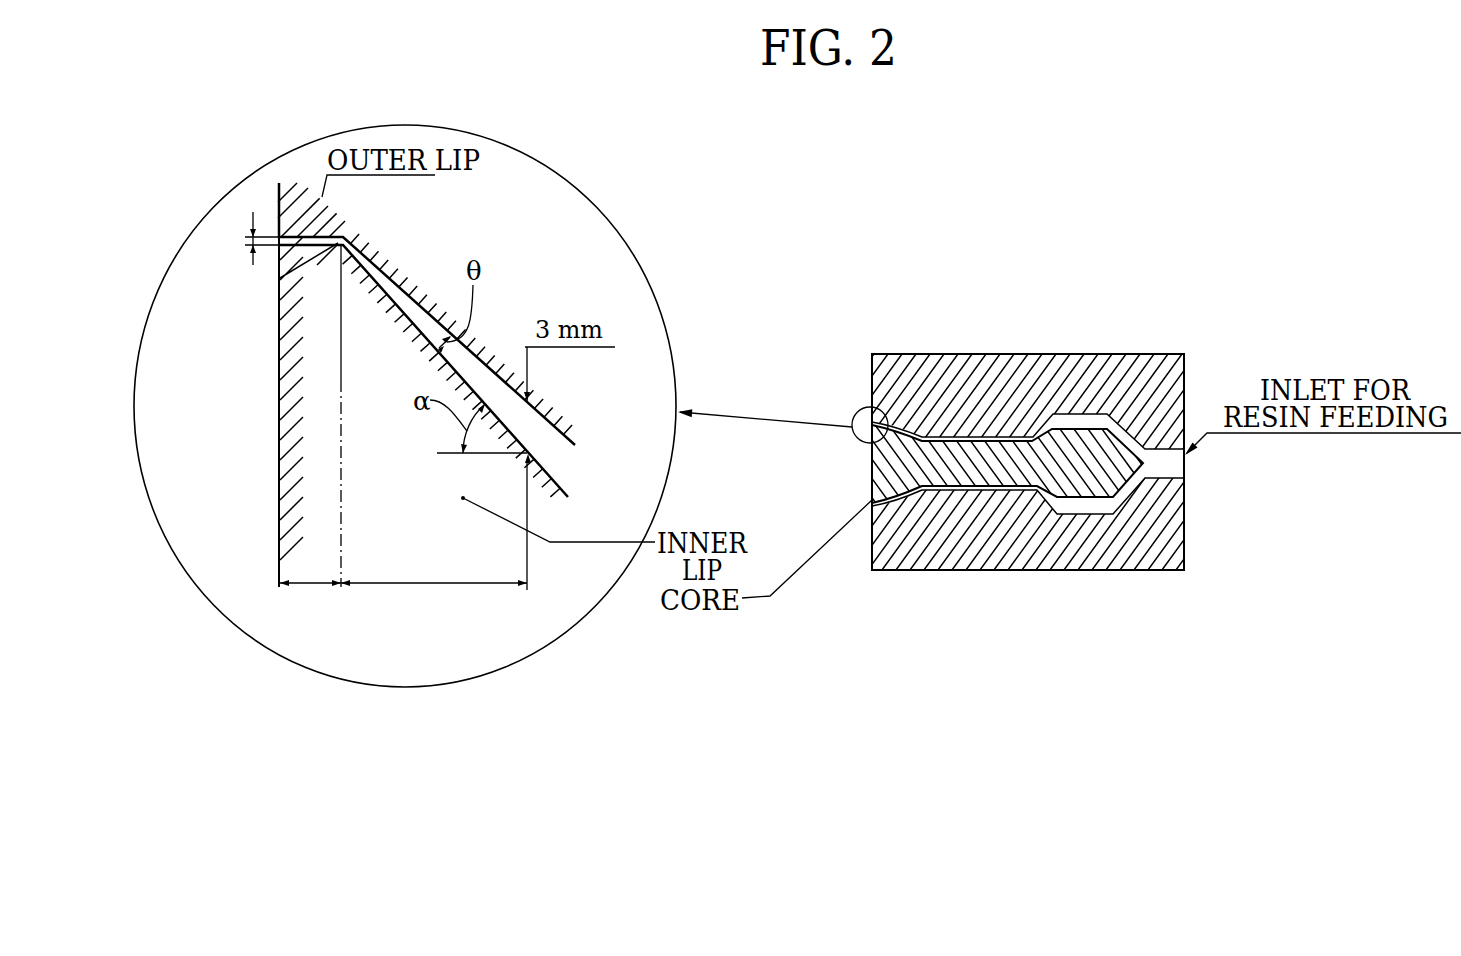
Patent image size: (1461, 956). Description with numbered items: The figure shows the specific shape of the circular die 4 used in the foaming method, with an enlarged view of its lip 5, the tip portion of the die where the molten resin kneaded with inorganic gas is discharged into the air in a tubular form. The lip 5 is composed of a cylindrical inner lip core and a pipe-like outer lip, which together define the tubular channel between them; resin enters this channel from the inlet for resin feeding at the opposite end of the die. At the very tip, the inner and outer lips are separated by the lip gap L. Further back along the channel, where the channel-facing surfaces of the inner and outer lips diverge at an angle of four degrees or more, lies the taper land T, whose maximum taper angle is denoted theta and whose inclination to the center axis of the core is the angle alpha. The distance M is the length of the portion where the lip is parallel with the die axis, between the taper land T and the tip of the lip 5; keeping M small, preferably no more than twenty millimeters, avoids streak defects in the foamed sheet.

The circular die 4 is at (1080, 342).
The lip 5 is at (910, 342).
The lip gap L is at (252, 238).
The distance between the taper land and the tip of the lip M is at (310, 600).
The taper land T is at (436, 537).